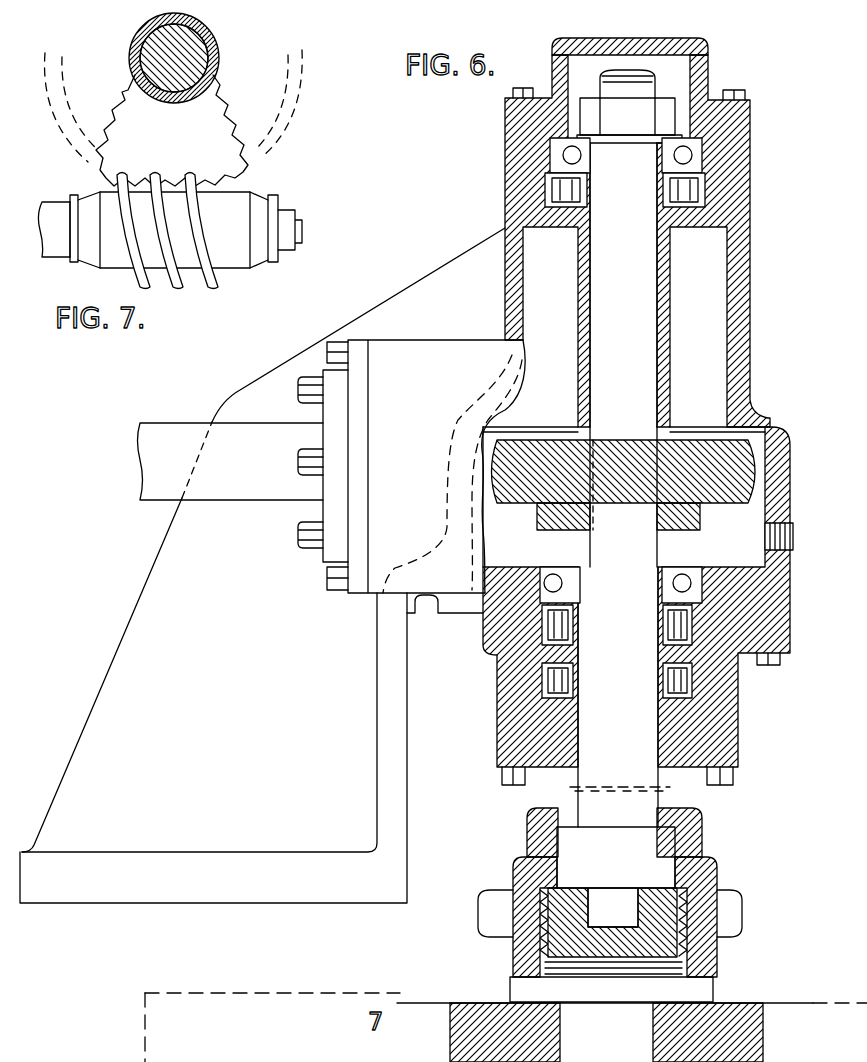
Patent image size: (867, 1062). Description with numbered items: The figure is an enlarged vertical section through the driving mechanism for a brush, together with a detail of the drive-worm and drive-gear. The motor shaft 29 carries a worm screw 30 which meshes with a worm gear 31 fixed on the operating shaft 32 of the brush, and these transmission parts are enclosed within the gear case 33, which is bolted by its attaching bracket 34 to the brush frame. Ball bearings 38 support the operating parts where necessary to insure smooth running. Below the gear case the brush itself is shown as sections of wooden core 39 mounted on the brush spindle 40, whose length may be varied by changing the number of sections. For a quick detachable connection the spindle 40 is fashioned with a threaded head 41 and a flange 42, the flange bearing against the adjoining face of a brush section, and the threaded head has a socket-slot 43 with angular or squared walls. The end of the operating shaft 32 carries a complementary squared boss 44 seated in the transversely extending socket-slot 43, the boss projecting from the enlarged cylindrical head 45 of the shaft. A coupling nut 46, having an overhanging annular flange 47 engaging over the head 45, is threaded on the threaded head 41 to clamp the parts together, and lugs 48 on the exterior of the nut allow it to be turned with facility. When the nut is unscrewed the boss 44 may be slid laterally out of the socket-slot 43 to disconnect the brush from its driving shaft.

In FIG. 7, the motor shaft 29 is at (48, 207).
In FIG. 6, the motor shaft 29 is at (152, 477).
In FIG. 7, the worm screw 30 is at (222, 288).
In FIG. 7, the worm gear 31 is at (235, 165).
In FIG. 6, the worm gear 31 is at (745, 445).
In FIG. 7, the operating shaft 32 is at (196, 60).
In FIG. 6, the operating shaft 32 is at (620, 485).
In FIG. 6, the gear case 33 is at (353, 410).
In FIG. 6, the attaching bracket 34 is at (213, 700).
In FIG. 6, the ball bearings 38 is at (672, 156).
In FIG. 6, the wooden core 39 is at (752, 1000).
In FIG. 6, the brush spindle 40 is at (606, 1032).
In FIG. 6, the threaded head 41 is at (663, 945).
In FIG. 6, the flange 42 is at (520, 988).
In FIG. 6, the socket-slot 43 is at (663, 866).
In FIG. 6, the angular boss 44 is at (718, 860).
In FIG. 6, the cylindrical head 45 is at (616, 857).
In FIG. 6, the coupling nut 46 is at (513, 902).
In FIG. 6, the annular flange 47 is at (527, 822).
In FIG. 6, the lugs 48 is at (490, 913).